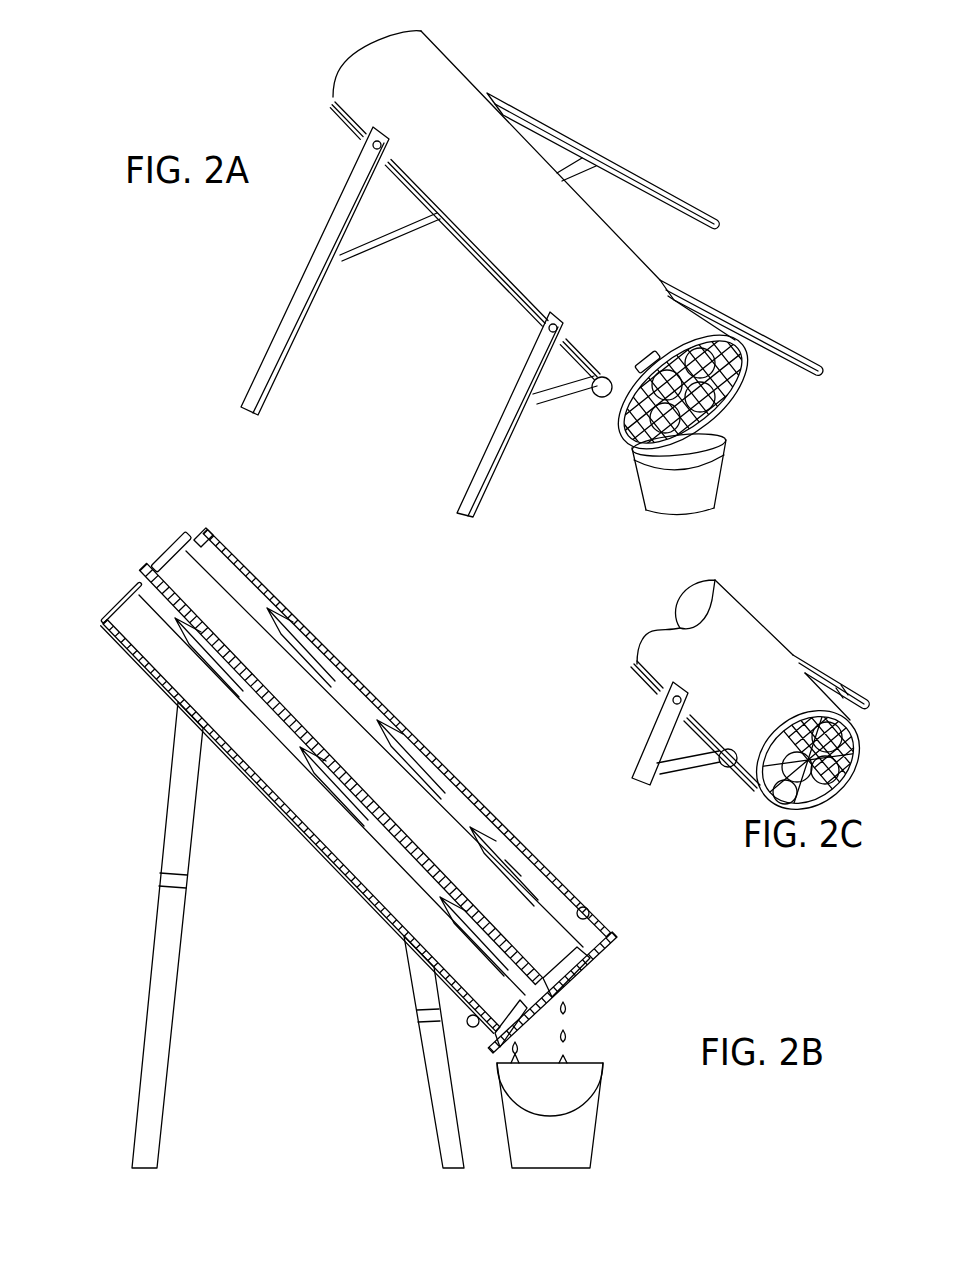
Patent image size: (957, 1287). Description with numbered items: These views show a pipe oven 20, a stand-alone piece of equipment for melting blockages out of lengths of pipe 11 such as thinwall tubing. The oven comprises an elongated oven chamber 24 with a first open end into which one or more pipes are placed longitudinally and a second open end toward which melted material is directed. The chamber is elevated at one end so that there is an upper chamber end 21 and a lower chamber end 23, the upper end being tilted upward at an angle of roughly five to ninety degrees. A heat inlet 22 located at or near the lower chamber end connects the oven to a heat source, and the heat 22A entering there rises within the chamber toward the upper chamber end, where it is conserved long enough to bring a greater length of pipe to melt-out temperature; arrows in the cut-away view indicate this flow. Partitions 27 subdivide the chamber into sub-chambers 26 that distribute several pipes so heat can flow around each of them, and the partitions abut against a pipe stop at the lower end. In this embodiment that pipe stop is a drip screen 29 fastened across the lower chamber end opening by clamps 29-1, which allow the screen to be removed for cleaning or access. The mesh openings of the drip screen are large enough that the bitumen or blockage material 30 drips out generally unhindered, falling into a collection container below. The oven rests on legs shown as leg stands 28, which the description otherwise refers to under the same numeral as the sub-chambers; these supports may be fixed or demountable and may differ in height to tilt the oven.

In FIG. 2B, the pipe 11 is at (220, 600).
In FIG. 2A, the pipe oven 20 is at (312, 66).
In FIG. 2B, the pipe oven 20 is at (352, 604).
In FIG. 2A, the upper chamber end 21 is at (395, 60).
In FIG. 2B, the upper chamber end 21 is at (132, 657).
In FIG. 2A, the heat inlet 22 is at (602, 397).
In FIG. 2B, the heat 22A is at (513, 870).
In FIG. 2A, the lower chamber end 23 is at (665, 318).
In FIG. 2B, the lower chamber end 23 is at (558, 893).
In FIG. 2C, the lower chamber end 23 is at (780, 705).
In FIG. 2A, the oven chamber 24 is at (500, 247).
In FIG. 2B, the oven chamber 24 is at (338, 660).
In FIG. 2C, the oven chamber 24 is at (683, 652).
In FIG. 2B, the sub-chambers 26 is at (208, 543).
In FIG. 2A, the partitions 27 is at (695, 335).
In FIG. 2B, the partitions 27 is at (347, 772).
In FIG. 2A, the leg 28 is at (312, 273).
In FIG. 2B, the leg 28 is at (164, 975).
In FIG. 2A, the drip screen 29 is at (733, 395).
In FIG. 2B, the drip screen 29 is at (597, 965).
In FIG. 2B, the clamps 29-1 is at (590, 910).
In FIG. 2B, the blockage material 30 is at (575, 1052).